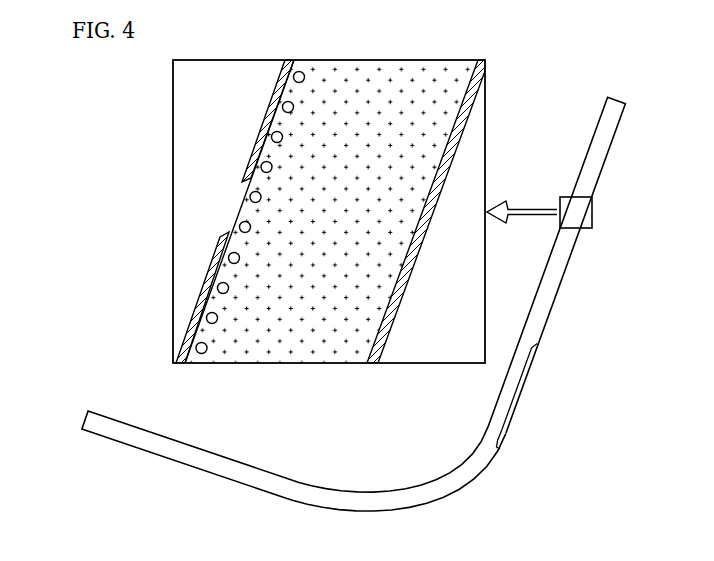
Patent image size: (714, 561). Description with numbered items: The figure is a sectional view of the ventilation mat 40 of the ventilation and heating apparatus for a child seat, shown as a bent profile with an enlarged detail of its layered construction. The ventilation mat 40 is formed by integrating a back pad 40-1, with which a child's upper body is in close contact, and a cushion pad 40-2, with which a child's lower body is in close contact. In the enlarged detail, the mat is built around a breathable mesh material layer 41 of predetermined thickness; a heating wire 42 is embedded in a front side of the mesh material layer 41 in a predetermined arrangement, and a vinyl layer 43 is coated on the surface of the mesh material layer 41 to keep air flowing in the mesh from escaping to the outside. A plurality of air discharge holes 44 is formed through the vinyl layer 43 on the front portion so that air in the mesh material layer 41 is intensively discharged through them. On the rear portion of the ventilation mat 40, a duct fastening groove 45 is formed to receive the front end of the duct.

The ventilation mat 40 is at (373, 319).
The back pad 40-1 is at (557, 295).
The cushion pad 40-2 is at (190, 453).
The mesh material layer 41 is at (252, 310).
The heating wire 42 is at (220, 252).
The vinyl layer 43 is at (263, 122).
The air discharge holes 44 is at (244, 183).
The duct fastening groove 45 is at (503, 437).